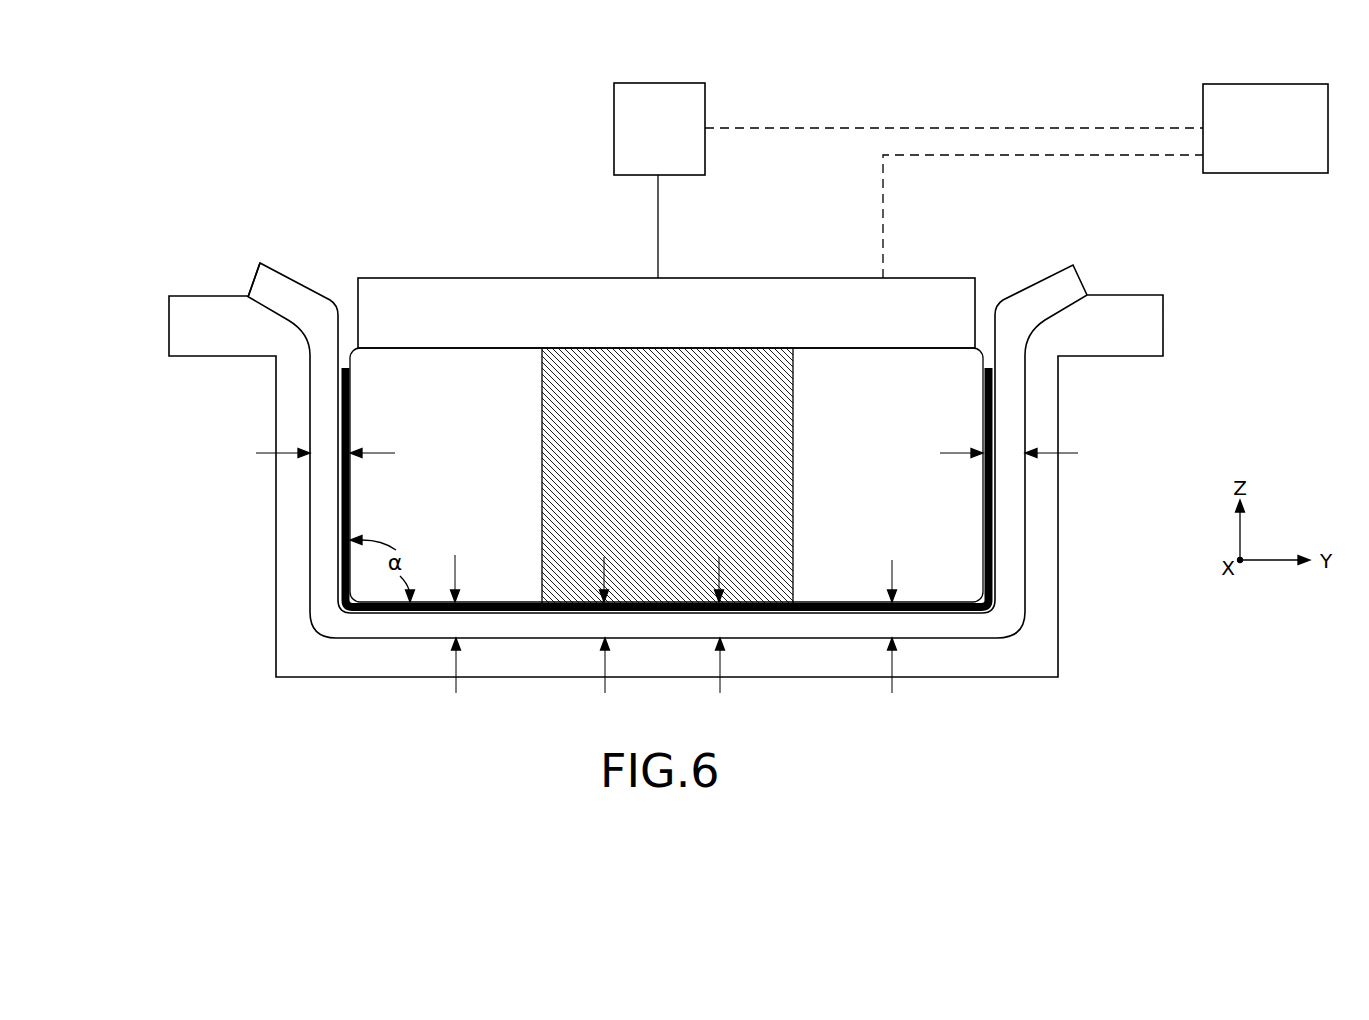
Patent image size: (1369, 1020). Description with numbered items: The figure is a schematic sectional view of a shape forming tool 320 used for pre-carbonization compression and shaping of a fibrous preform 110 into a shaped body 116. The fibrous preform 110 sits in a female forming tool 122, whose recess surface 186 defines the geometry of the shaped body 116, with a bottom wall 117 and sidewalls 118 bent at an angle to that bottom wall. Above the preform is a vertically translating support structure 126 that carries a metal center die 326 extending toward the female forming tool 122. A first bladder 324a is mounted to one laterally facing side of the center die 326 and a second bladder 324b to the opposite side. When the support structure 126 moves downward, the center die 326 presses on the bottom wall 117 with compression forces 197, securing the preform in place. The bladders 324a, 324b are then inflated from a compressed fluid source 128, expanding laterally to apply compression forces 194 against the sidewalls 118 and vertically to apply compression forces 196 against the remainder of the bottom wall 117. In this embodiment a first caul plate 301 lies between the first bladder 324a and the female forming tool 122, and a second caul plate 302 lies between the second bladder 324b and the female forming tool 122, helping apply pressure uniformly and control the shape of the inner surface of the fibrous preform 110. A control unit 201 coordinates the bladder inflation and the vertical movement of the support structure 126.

The shape forming tool 320 is at (170, 165).
The shaped body 116 is at (255, 254).
The fibrous preform 110 is at (290, 277).
The compressed fluid source 128 is at (620, 122).
The control unit 201 is at (1263, 173).
The support structure 126 is at (604, 324).
The female forming tool 122 is at (276, 476).
The sidewall 118 is at (325, 527).
The compression forces 194 is at (385, 452).
The first bladder 324a is at (423, 440).
The second bladder 324b is at (870, 430).
The center die 326 is at (778, 495).
The compression forces 196 is at (455, 576).
The compression forces 197 is at (604, 576).
The first caul plate 301 is at (340, 606).
The second caul plate 302 is at (993, 605).
The recess surface 186 is at (424, 636).
The bottom wall 117 is at (580, 625).